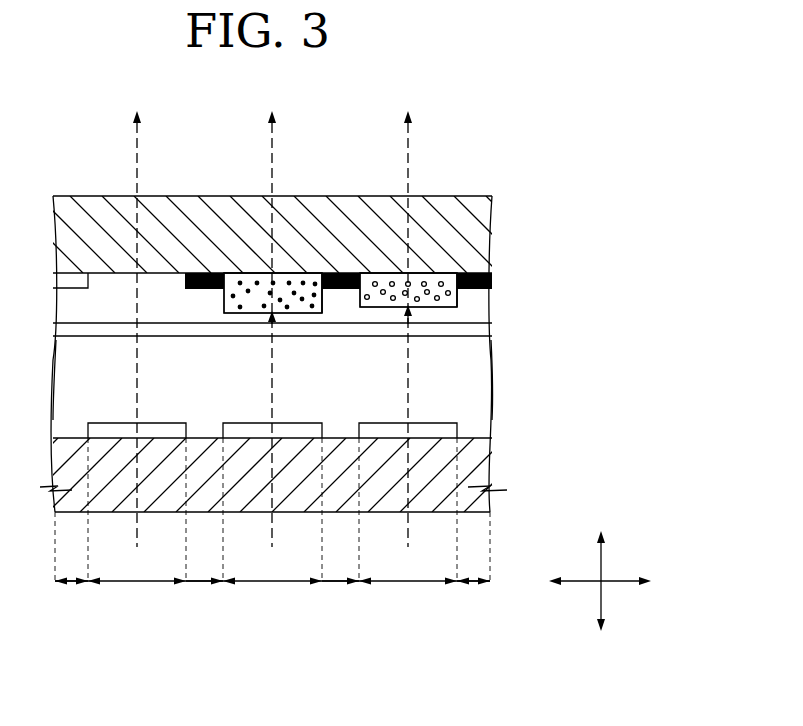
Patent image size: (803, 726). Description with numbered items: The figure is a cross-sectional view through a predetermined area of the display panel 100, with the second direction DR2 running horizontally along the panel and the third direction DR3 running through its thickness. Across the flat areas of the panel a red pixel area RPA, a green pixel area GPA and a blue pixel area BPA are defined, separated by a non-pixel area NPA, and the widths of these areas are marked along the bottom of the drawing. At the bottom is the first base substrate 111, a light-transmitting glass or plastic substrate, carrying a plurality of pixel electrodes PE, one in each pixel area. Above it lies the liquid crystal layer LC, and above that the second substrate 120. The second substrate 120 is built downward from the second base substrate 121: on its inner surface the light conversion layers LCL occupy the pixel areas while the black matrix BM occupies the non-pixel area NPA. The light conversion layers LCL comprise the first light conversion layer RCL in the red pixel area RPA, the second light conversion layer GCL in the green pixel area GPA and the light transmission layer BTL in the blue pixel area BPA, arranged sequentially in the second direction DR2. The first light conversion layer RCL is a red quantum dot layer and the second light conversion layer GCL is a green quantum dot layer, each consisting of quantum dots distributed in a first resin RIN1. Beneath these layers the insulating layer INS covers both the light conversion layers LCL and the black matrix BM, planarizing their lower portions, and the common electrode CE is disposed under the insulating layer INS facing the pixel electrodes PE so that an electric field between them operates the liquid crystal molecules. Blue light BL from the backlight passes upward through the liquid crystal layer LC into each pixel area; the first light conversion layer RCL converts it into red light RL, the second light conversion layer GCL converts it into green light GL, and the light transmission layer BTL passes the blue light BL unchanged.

The second substrate 120 is at (315, 237).
The second base substrate 121 is at (482, 225).
The light transmission layer BTL is at (105, 285).
The black matrix BM is at (492, 278).
The light conversion layers LCL is at (390, 214).
The second light conversion layer GCL is at (295, 300).
The first light conversion layer RCL is at (430, 305).
The first resin RIN1 is at (313, 300).
The insulating layer INS is at (482, 313).
The common electrode CE is at (303, 344).
The liquid crystal layer LC is at (483, 387).
The display panel 100 is at (313, 466).
The pixel electrodes PE is at (452, 430).
The first base substrate 111 is at (480, 472).
The light generated by the backlight unit BL is at (272, 328).
The light having a second color GL is at (272, 317).
The light having a first color RL is at (408, 317).
The blue pixel area BPA is at (120, 521).
The green pixel area GPA is at (254, 521).
The red pixel area RPA is at (406, 521).
The non-pixel area NPA is at (471, 582).
The second direction DR2 is at (619, 581).
The third direction DR3 is at (601, 569).